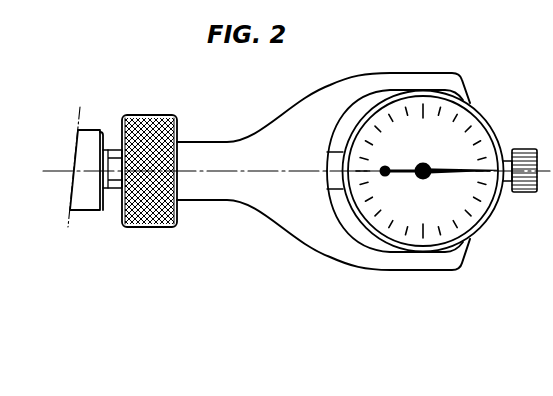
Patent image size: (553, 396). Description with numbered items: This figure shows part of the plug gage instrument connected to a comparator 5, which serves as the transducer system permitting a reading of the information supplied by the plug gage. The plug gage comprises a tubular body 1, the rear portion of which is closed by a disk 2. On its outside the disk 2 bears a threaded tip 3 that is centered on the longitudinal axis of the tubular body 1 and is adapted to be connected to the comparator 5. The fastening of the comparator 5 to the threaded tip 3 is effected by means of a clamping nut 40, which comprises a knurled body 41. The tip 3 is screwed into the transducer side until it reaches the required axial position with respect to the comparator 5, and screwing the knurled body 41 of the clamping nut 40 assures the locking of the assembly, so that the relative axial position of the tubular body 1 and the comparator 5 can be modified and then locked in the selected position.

The tubular body 1 is at (88, 130).
The disk 2 is at (107, 150).
The threaded tip 3 is at (111, 190).
The comparator 5 is at (330, 266).
The clamping nut 40 is at (134, 240).
The knurled body 41 is at (180, 214).